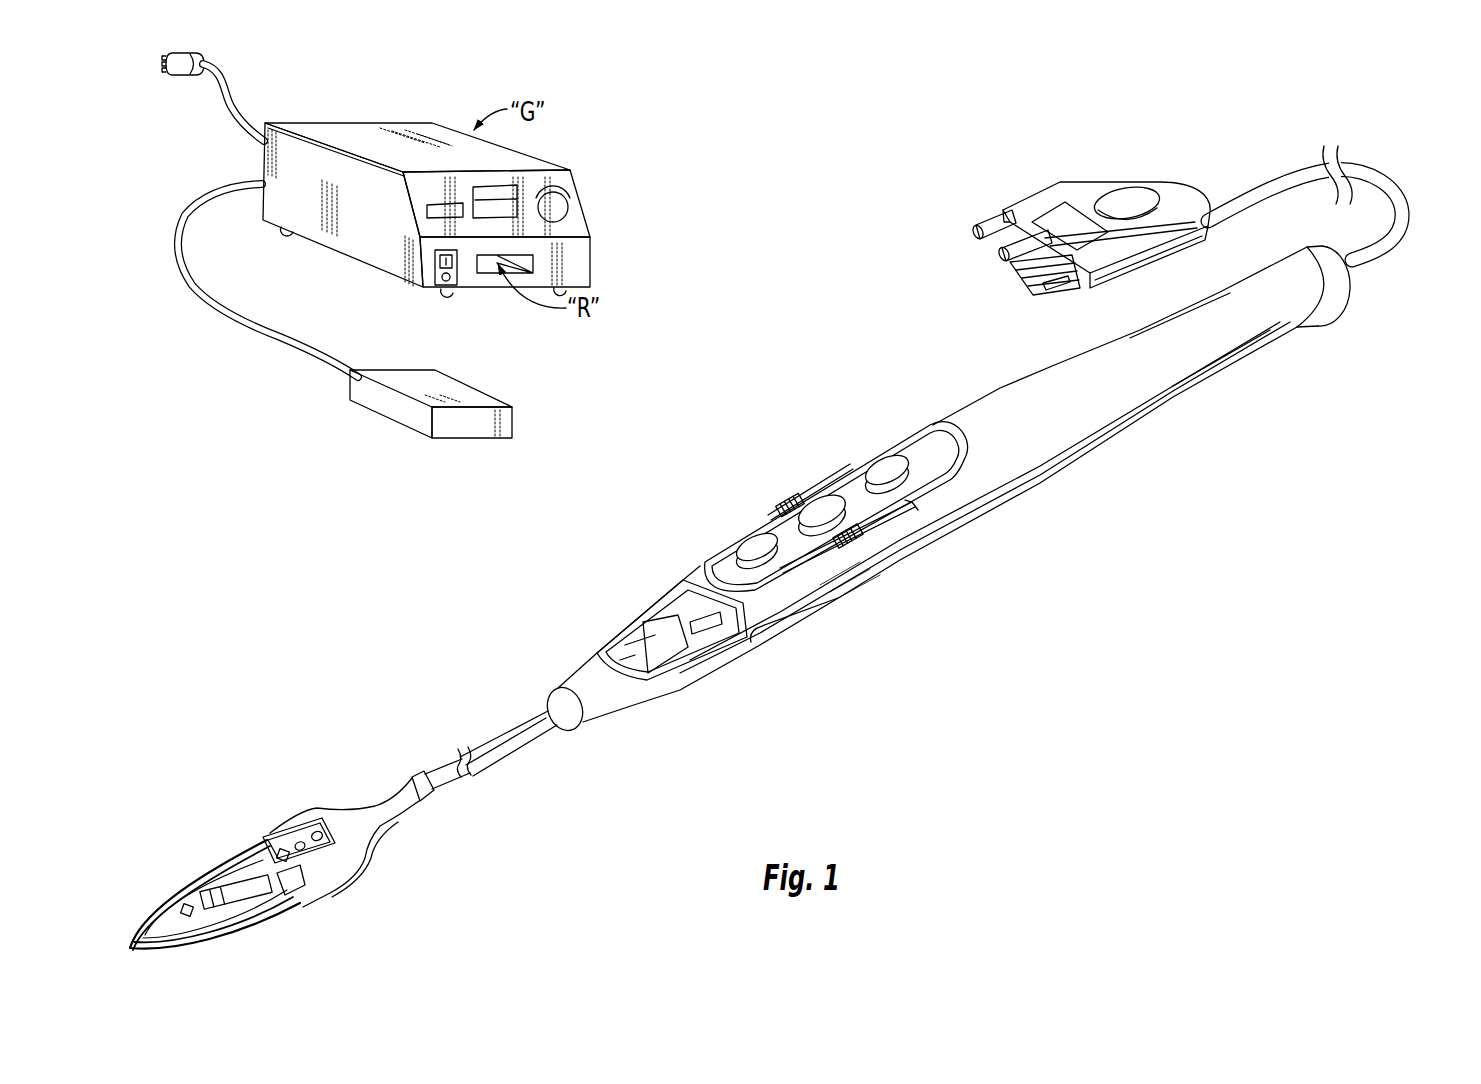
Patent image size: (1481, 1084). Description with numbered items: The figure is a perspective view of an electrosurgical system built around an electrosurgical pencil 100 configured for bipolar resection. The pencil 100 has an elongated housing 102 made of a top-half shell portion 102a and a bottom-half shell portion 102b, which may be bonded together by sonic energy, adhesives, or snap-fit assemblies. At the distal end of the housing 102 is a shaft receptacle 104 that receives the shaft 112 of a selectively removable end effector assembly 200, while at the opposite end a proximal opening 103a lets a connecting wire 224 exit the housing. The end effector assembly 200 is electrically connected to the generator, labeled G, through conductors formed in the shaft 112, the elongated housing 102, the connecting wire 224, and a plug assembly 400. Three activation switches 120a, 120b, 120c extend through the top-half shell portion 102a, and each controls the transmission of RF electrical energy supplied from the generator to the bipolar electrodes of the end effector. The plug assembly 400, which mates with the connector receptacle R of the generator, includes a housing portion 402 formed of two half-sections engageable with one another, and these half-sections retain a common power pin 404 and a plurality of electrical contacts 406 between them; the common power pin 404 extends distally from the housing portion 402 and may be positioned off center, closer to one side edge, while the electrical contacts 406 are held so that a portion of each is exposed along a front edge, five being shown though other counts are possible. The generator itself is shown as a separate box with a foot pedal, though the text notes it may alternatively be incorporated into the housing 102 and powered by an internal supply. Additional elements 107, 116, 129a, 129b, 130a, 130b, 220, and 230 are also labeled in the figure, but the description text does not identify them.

The electrosurgical pencil 100 is at (707, 400).
The elongated housing 102 is at (985, 404).
The top-half shell portion 102a is at (1056, 368).
The bottom-half shell portion 102b is at (1128, 434).
The proximal opening 103a is at (1355, 278).
The shaft receptacle 104 is at (690, 648).
The control panel recess 107 is at (936, 468).
The shaft 112 is at (523, 720).
The shaft 116 is at (447, 788).
The activation switch 120a is at (750, 530).
The activation switch 120b is at (810, 490).
The activation switch 120c is at (880, 458).
The first slider 129a is at (782, 503).
The second slider 129b is at (855, 545).
The first slot 130a is at (847, 470).
The second slot 130b is at (912, 513).
The end effector assembly 200 is at (208, 757).
The end effector housing 220 is at (330, 803).
The jaw members 230 is at (137, 905).
The connecting wire 224 is at (1406, 192).
The plug assembly 400 is at (1058, 164).
The housing portion 402 is at (1130, 183).
The common power pin 404 is at (1056, 289).
The electrical contacts 406 is at (1014, 290).